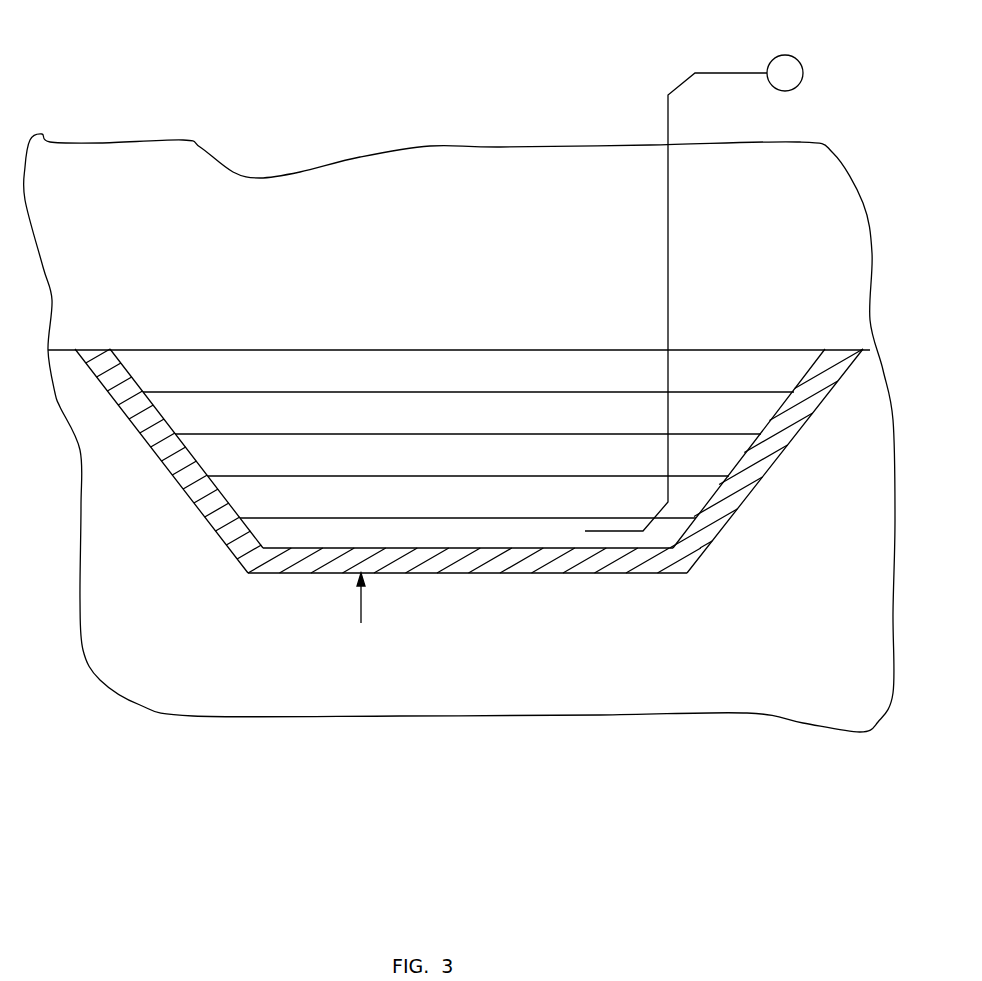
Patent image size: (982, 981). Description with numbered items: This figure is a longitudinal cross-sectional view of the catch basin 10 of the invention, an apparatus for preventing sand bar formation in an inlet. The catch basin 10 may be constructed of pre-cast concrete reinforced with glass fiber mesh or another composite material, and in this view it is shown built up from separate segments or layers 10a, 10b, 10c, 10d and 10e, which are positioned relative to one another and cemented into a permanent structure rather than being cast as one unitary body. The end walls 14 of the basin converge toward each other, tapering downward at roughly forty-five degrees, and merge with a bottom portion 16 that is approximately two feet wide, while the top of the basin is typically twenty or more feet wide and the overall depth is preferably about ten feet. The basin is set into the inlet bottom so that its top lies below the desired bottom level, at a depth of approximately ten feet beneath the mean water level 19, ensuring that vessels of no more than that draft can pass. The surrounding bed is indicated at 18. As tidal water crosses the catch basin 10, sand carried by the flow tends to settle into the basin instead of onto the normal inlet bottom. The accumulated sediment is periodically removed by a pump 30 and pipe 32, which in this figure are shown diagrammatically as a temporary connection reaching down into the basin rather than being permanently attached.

The catch basin 10 is at (361, 608).
The segment or layer 10a is at (255, 368).
The segment or layer 10b is at (337, 408).
The segment or layer 10c is at (428, 460).
The segment or layer 10d is at (487, 498).
The segment or layer 10e is at (538, 530).
The end walls 14 is at (170, 473).
The bottom portion 16 is at (470, 573).
The top surface 18 is at (63, 349).
The mean water level 19 is at (426, 152).
The pump 30 is at (783, 56).
The pipe 32 is at (682, 85).